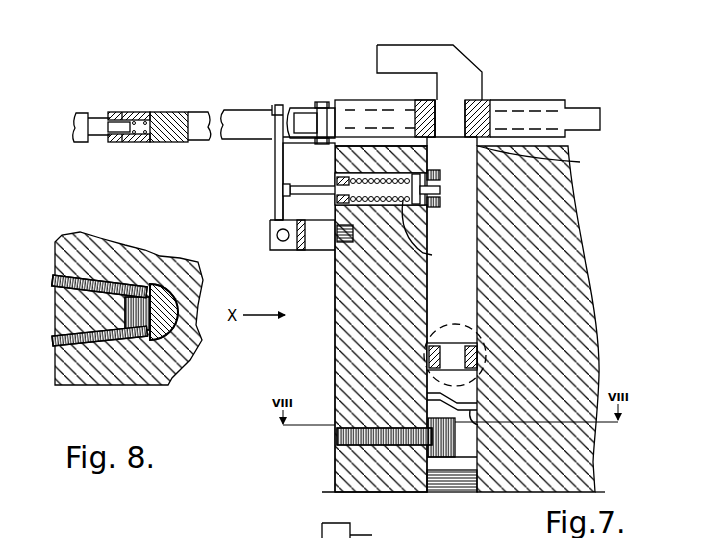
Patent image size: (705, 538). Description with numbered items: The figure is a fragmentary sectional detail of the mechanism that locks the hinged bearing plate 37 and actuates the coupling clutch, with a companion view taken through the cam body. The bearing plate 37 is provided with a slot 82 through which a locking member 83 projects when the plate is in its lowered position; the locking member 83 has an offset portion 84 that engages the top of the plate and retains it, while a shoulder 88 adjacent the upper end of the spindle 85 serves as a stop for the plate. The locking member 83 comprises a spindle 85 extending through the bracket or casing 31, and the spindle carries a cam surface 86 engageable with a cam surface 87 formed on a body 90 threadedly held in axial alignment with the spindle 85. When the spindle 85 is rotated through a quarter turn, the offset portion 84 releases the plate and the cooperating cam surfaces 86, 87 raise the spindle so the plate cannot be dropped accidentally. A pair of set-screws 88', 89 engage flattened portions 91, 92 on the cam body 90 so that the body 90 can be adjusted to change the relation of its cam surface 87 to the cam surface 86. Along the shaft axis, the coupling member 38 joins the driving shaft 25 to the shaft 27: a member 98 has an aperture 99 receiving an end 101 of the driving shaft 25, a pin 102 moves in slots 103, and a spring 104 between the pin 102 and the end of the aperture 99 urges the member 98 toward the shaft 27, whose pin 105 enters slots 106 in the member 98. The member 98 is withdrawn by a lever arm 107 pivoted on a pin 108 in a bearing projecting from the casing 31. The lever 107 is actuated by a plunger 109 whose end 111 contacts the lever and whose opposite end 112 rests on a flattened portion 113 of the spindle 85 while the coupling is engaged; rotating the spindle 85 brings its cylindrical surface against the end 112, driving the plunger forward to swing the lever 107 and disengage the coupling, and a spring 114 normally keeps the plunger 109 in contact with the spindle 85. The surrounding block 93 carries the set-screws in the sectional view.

In FIG. 7, the driving shaft 25 is at (83, 113).
In FIG. 7, the shaft 27 is at (330, 104).
In FIG. 7, the casing 31 is at (570, 345).
In FIG. 7, the bearing plate 37 is at (545, 100).
In FIG. 7, the coupling member 38 is at (237, 108).
In FIG. 7, the slot 82 is at (412, 100).
In FIG. 7, the locking member 83 is at (404, 45).
In FIG. 7, the offset portion 84 is at (482, 93).
In FIG. 7, the spindle 85 is at (467, 247).
In FIG. 7, the cam surface 86 is at (478, 398).
In FIG. 7, the cam surface 87 is at (478, 425).
In FIG. 7, the shoulder 88 is at (540, 158).
In FIG. 8, the shoulder 88 is at (77, 343).
In FIG. 7, the set-screw 88' is at (369, 437).
In FIG. 8, the set-screw 89 is at (53, 280).
In FIG. 7, the body 90 is at (467, 462).
In FIG. 8, the flattened portion 91 is at (150, 293).
In FIG. 7, the flattened portion 92 is at (447, 452).
In FIG. 8, the flattened portion 92 is at (150, 332).
In FIG. 8, the block 93 is at (180, 305).
In FIG. 7, the member 98 is at (200, 140).
In FIG. 7, the aperture 99 is at (162, 112).
In FIG. 7, the end 101 is at (137, 131).
In FIG. 7, the pin 102 is at (118, 142).
In FIG. 7, the slots 103 is at (148, 143).
In FIG. 7, the spring 104 is at (186, 112).
In FIG. 7, the pin 105 is at (318, 103).
In FIG. 7, the slots 106 is at (315, 140).
In FIG. 7, the lever arm 107 is at (278, 176).
In FIG. 7, the pin 108 is at (284, 242).
In FIG. 7, the plunger 109 is at (313, 192).
In FIG. 7, the end 111 is at (283, 197).
In FIG. 7, the end 112 is at (440, 189).
In FIG. 7, the flattened portion 113 is at (436, 178).
In FIG. 7, the spring 114 is at (431, 233).